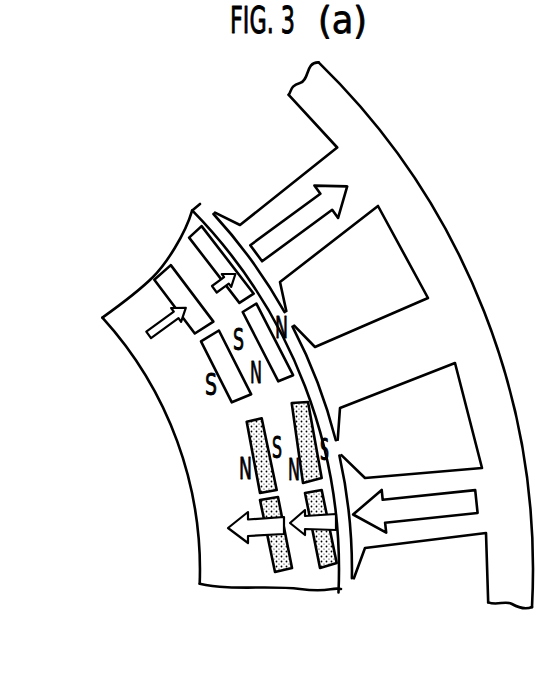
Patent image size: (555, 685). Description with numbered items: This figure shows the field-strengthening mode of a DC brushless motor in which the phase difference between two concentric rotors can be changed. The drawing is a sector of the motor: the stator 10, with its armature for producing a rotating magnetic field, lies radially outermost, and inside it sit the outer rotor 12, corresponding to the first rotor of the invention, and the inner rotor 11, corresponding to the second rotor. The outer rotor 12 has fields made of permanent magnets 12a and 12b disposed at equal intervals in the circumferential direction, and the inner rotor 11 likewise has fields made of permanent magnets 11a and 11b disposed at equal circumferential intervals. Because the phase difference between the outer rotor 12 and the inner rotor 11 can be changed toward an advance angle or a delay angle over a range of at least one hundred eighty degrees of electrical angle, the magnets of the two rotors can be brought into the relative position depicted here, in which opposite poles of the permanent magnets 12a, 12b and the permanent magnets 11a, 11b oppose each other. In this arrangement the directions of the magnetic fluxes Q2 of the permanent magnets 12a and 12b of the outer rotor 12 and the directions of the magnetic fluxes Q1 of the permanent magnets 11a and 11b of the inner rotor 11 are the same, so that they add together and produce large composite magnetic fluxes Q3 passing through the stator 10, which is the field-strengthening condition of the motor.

The stator 10 is at (380, 173).
The inner rotor 11 is at (162, 408).
The permanent magnet 11a is at (162, 292).
The permanent magnet 11b is at (250, 443).
The outer rotor 12 is at (237, 365).
The permanent magnet 12a is at (186, 246).
The permanent magnet 12b is at (315, 410).
The magnetic fluxes Q1 is at (163, 323).
The magnetic fluxes Q2 is at (221, 282).
The composite magnetic fluxes Q3 is at (293, 210).